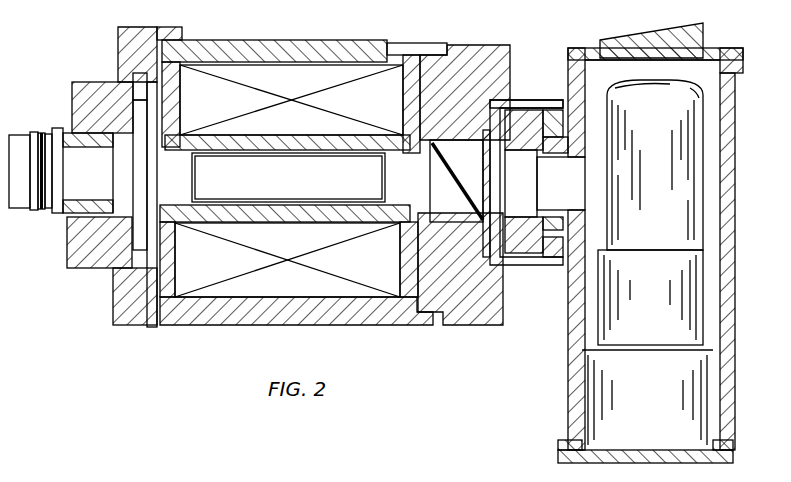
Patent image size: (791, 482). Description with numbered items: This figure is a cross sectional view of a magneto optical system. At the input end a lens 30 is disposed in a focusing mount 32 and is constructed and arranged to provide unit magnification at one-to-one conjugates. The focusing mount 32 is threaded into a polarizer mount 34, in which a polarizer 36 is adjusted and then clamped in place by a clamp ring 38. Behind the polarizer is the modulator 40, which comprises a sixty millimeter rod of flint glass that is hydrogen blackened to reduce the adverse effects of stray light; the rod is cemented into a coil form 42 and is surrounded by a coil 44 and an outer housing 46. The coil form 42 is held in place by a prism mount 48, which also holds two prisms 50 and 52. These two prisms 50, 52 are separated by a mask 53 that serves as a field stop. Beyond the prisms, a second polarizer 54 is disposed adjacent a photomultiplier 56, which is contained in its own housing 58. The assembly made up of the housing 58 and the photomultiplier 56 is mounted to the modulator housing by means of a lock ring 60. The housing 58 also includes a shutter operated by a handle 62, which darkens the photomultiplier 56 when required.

The lens 30 is at (28, 134).
The focusing mount 32 is at (58, 215).
The polarizer mount 34 is at (80, 82).
The polarizer 36 is at (140, 178).
The clamp ring 38 is at (115, 290).
The modulator 40 is at (242, 191).
The coil form 42 is at (272, 219).
The coil 44 is at (299, 287).
The outer housing 46 is at (348, 326).
The prism mount 48 is at (455, 326).
The prism 50 is at (462, 213).
The prism 52 is at (487, 186).
The mask 53 is at (451, 149).
The second polarizer 54 is at (500, 201).
The photomultiplier 56 is at (661, 168).
The housing 58 is at (567, 388).
The lock ring 60 is at (562, 99).
The handle 62 is at (703, 42).